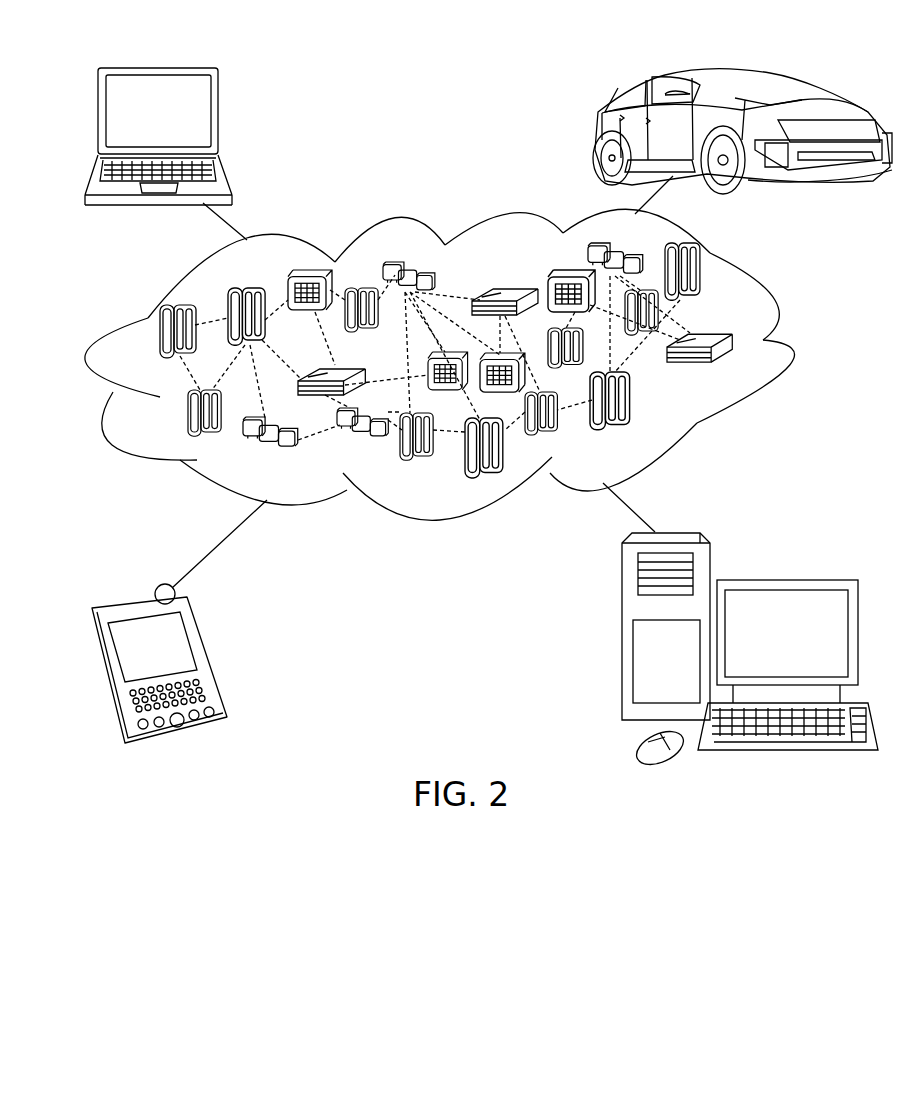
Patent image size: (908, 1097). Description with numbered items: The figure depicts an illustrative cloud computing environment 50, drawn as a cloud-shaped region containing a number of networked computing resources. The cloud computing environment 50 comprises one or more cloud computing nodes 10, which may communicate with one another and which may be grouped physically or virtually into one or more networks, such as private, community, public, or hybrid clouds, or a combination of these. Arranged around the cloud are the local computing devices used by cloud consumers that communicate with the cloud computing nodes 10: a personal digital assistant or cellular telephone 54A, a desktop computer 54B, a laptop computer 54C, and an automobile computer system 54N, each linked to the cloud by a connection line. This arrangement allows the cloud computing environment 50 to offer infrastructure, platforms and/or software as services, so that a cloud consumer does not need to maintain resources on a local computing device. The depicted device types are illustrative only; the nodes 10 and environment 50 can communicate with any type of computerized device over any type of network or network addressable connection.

The cloud computing node 10 is at (737, 367).
The cloud computing environment 50 is at (777, 345).
The personal digital assistant or cellular telephone 54A is at (210, 655).
The desktop computer 54B is at (793, 568).
The laptop computer 54C is at (217, 120).
The automobile computer system 54N is at (597, 132).